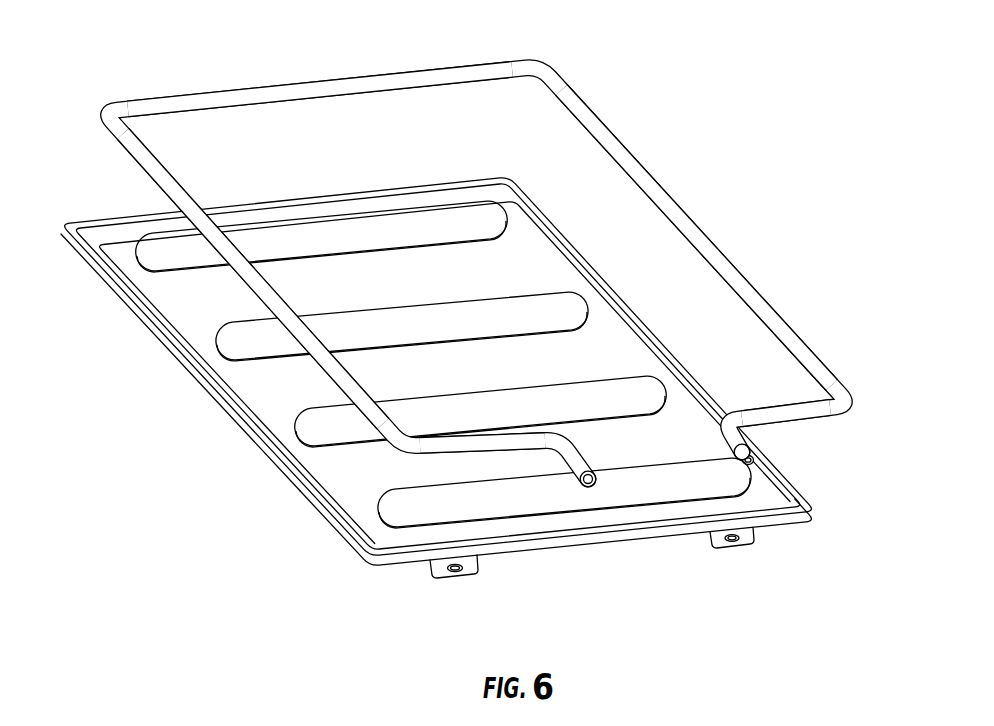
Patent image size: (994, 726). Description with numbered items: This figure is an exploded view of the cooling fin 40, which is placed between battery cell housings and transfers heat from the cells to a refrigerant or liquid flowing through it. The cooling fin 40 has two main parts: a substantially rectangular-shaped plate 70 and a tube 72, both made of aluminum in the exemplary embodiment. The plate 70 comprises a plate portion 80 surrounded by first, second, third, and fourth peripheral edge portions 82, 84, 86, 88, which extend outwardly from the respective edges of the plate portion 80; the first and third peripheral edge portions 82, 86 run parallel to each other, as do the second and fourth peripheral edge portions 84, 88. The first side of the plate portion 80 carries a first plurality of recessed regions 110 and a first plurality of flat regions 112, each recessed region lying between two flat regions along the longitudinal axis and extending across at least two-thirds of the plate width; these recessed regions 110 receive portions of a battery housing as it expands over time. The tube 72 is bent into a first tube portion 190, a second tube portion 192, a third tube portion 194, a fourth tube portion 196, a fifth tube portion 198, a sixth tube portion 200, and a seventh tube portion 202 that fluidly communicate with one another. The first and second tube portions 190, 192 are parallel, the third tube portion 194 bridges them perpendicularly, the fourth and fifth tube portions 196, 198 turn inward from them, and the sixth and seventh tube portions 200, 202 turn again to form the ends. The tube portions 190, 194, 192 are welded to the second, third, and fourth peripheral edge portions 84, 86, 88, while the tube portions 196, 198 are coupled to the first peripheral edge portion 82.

The cooling fin 40 is at (774, 102).
The substantially rectangular-shaped plate 70 is at (463, 369).
The tube 72 is at (499, 270).
The plate portion 80 is at (463, 382).
The first peripheral edge portion 82 is at (507, 553).
The second peripheral edge portion 84 is at (352, 535).
The third peripheral edge portion 86 is at (284, 194).
The fourth peripheral edge portion 88 is at (776, 466).
The first plurality of recessed regions 110 is at (400, 510).
The first plurality of flat regions 112 is at (630, 517).
The first tube portion 190 is at (254, 285).
The second tube portion 192 is at (692, 226).
The third tube portion 194 is at (381, 72).
The fourth tube portion 196 is at (454, 452).
The fifth tube portion 198 is at (812, 418).
The sixth tube portion 200 is at (574, 468).
The seventh tube portion 202 is at (733, 450).